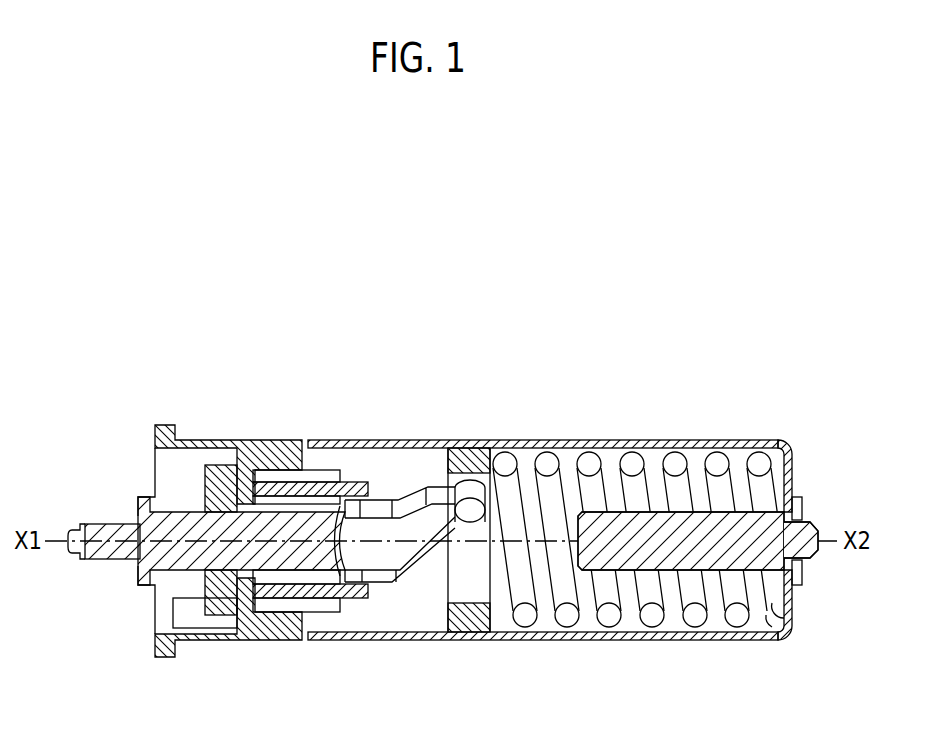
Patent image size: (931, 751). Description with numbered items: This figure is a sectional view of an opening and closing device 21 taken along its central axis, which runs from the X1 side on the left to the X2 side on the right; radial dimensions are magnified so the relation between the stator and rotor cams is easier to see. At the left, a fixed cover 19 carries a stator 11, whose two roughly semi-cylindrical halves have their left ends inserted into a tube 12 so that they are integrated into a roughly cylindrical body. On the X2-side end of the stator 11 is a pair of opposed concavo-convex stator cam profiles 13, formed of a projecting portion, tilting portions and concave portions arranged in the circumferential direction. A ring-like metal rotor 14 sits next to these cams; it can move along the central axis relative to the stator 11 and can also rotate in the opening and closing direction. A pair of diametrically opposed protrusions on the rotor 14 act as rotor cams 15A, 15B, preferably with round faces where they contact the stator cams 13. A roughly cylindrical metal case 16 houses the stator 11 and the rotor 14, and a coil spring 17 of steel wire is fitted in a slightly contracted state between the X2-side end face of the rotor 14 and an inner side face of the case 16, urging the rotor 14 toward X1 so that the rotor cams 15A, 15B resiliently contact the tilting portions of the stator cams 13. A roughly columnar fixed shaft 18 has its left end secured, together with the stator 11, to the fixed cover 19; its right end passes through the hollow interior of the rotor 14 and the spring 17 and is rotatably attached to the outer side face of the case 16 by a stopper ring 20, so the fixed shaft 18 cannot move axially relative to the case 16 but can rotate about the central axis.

The stator 11 is at (355, 485).
The tube 12 is at (287, 473).
The stator cam profile 13 is at (415, 541).
The rotor 14 is at (470, 614).
The rotor cam 15A is at (467, 488).
The rotor cam 15B is at (500, 446).
The case 16 is at (655, 443).
The coil spring 17 is at (652, 621).
The fixed shaft 18 is at (707, 553).
The fixed cover 19 is at (165, 652).
The stopper ring 20 is at (798, 584).
The opening and closing device 21 is at (771, 420).